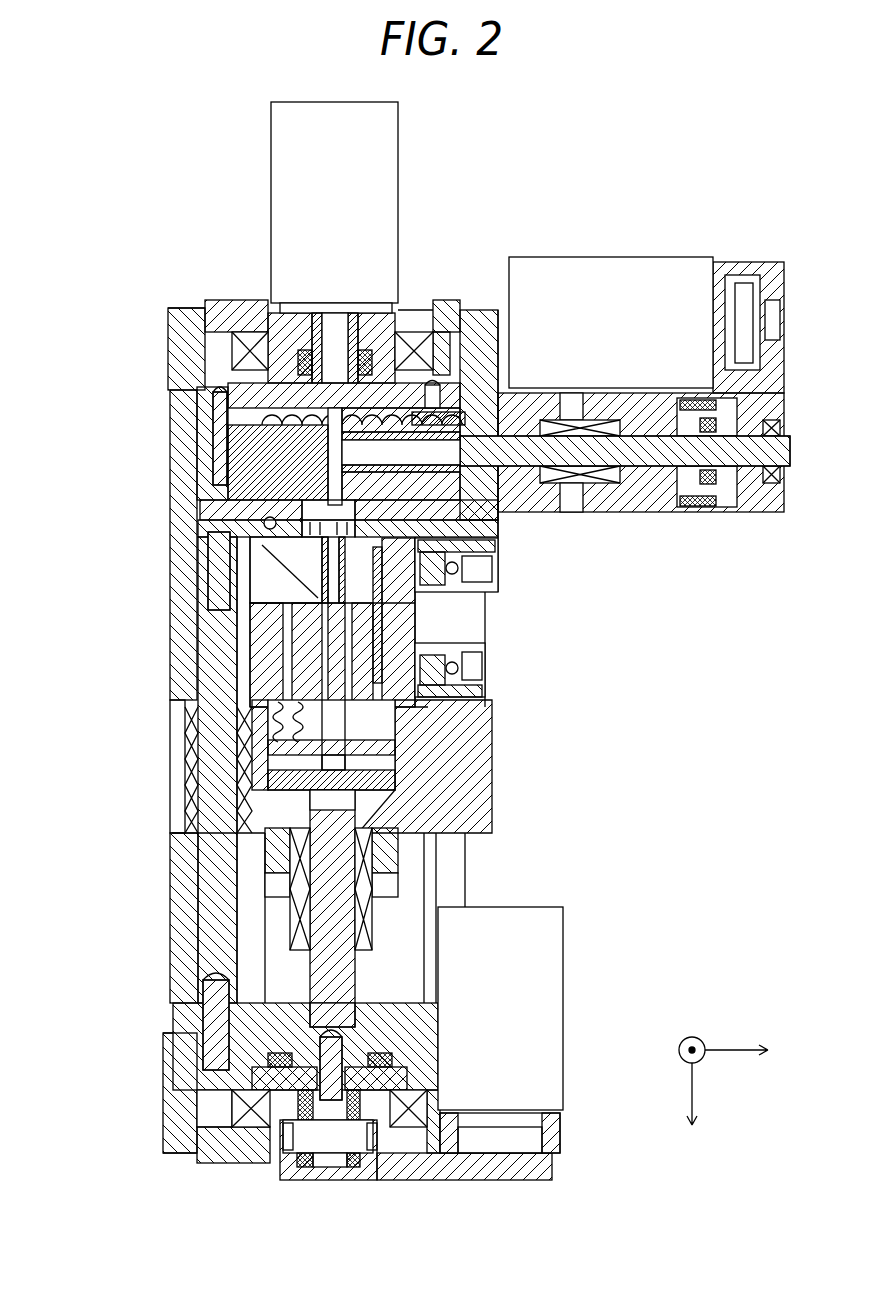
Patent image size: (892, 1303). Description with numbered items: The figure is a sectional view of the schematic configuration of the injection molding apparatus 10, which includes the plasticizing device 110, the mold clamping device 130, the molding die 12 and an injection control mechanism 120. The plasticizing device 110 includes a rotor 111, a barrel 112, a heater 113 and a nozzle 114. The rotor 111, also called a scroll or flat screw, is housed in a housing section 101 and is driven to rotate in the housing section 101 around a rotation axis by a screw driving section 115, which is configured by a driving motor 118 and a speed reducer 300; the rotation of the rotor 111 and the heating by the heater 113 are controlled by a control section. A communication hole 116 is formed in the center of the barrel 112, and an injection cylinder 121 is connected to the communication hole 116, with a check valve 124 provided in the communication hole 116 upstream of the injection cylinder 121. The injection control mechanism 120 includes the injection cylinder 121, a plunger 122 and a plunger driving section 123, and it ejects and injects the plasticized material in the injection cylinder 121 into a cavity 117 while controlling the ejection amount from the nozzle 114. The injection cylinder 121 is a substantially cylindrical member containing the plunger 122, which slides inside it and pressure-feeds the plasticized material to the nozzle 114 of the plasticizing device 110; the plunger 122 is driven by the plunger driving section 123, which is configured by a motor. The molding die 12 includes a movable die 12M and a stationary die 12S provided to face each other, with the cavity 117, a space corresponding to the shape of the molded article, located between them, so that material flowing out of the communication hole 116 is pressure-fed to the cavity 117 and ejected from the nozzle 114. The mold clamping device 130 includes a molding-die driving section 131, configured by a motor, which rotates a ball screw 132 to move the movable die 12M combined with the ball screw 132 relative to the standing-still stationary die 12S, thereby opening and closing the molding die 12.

The injection molding apparatus 10 is at (157, 175).
The housing section 101 is at (245, 395).
The plasticizing device 110 is at (462, 246).
The rotor 111 is at (250, 382).
The barrel 112 is at (215, 395).
The heater 113 is at (210, 440).
The nozzle 114 is at (280, 570).
The screw driving section 115 is at (132, 226).
The communication hole 116 is at (205, 508).
The cavity 117 is at (335, 620).
The driving motor 118 is at (270, 248).
The speed reducer 300 is at (240, 320).
The molding die 12 is at (562, 590).
The stationary die 12S is at (407, 590).
The movable die 12M is at (407, 640).
The injection control mechanism 120 is at (735, 540).
The injection cylinder 121 is at (485, 500).
The plunger 122 is at (632, 460).
The plunger driving section 123 is at (615, 265).
The check valve 124 is at (290, 470).
The mold clamping device 130 is at (520, 897).
The molding-die driving section 131 is at (565, 1010).
The ball screw 132 is at (308, 955).